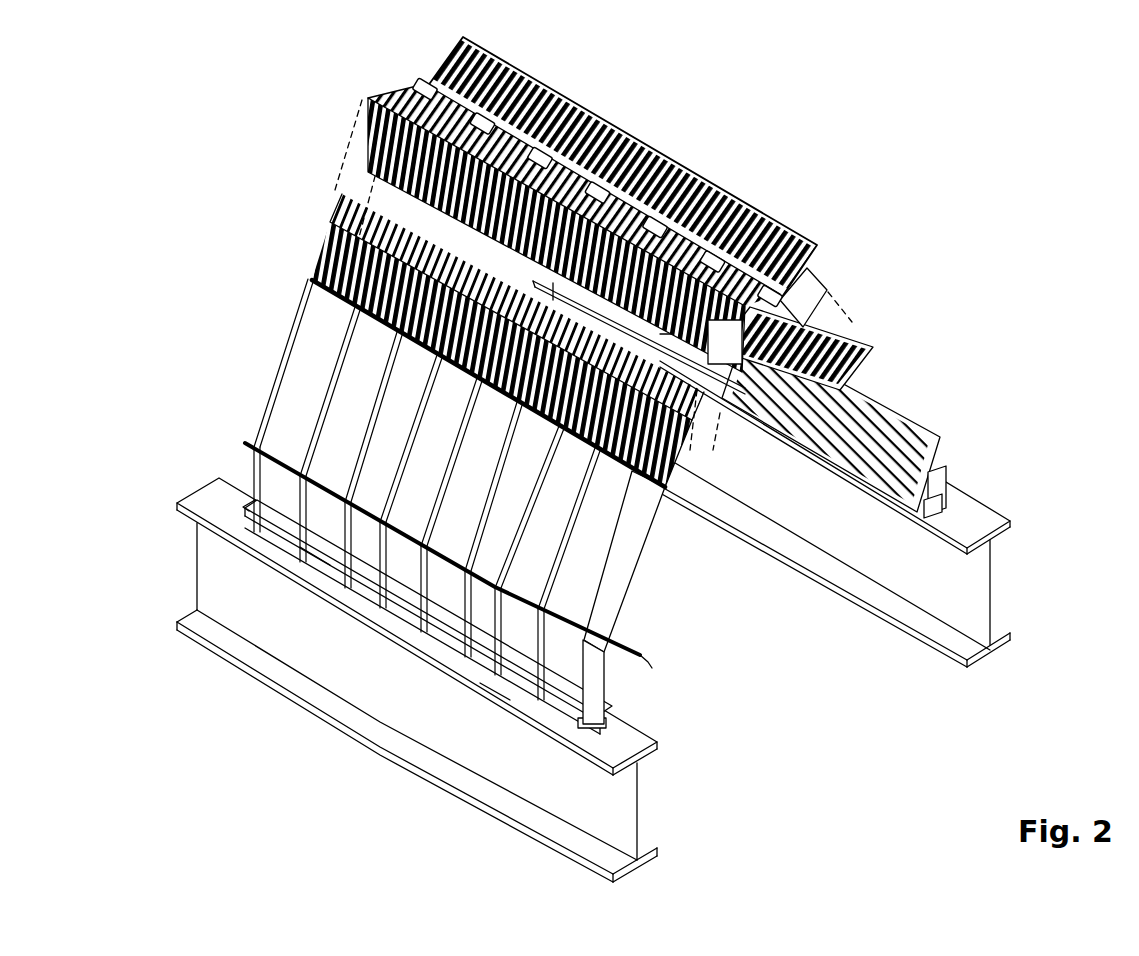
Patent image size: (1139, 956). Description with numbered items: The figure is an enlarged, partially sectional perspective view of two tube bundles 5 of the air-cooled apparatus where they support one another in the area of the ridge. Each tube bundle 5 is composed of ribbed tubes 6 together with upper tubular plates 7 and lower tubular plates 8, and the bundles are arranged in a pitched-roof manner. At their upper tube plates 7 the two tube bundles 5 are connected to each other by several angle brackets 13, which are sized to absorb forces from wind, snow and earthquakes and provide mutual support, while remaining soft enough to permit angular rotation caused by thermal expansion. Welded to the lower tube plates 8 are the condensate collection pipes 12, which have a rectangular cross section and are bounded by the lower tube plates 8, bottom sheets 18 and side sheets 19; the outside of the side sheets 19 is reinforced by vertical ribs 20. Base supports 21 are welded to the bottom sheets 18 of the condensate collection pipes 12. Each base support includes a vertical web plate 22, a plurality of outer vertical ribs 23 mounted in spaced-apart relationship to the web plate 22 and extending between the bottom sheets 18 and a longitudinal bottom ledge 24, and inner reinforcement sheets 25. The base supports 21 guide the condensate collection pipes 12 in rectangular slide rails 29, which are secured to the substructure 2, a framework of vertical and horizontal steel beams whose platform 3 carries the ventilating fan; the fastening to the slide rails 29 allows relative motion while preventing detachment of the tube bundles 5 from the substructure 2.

The substructure 2 is at (373, 735).
The platform 3 is at (1000, 583).
The tube bundles 5 is at (340, 183).
The ribbed tubes 6 is at (330, 248).
The upper tubular plates 7 is at (703, 190).
The lower tubular plates 8 is at (340, 300).
The condensate collection pipes 12 is at (405, 400).
The angle brackets 13 is at (600, 140).
The bottom sheets 18 is at (300, 470).
The side sheets 19 is at (900, 417).
The vertical ribs 20 is at (765, 422).
The base supports 21 is at (935, 470).
The vertical web plate 22 is at (420, 618).
The outer vertical ribs 23 is at (372, 563).
The longitudinal bottom ledge 24 is at (493, 693).
The inner reinforcement sheets 25 is at (604, 658).
The slide rails 29 is at (553, 706).